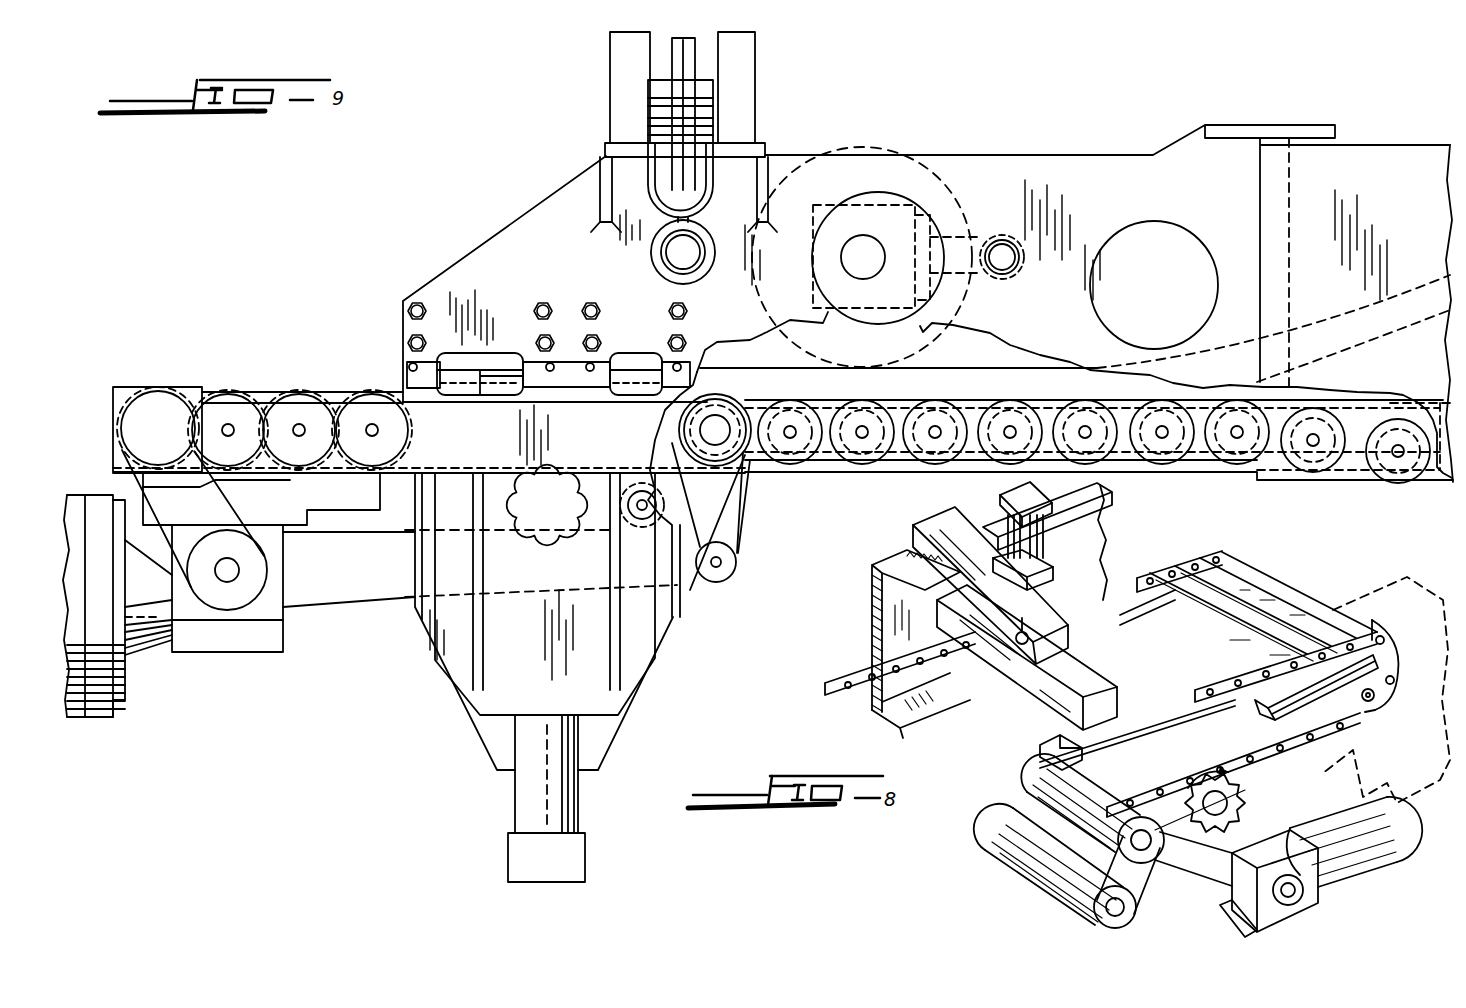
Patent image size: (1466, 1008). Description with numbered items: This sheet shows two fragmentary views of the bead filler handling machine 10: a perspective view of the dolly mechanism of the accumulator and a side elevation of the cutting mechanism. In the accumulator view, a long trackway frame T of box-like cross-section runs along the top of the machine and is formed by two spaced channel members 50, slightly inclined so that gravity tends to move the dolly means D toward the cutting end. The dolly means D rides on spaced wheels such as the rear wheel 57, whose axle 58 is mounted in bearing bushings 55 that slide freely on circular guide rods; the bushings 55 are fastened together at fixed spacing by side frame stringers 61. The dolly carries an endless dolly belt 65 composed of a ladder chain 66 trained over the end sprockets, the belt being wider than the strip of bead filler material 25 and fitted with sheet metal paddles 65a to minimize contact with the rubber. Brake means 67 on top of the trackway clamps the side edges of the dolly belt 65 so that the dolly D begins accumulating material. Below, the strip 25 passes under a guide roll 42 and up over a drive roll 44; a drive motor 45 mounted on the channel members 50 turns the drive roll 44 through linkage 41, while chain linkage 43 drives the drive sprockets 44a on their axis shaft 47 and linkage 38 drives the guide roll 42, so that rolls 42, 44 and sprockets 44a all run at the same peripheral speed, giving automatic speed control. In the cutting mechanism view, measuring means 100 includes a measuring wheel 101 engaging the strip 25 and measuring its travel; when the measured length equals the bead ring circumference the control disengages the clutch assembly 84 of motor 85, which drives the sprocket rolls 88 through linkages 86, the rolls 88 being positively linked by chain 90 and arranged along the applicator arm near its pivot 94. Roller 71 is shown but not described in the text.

In FIG. 9, the machine 10 is at (538, 118).
In FIG. 9, the strip of bead filler material 25 is at (1099, 427).
In FIG. 9, the end roller 71 is at (1425, 424).
In FIG. 9, the sprocket rolls 88 is at (760, 472).
In FIG. 9, the chain 90 is at (255, 392).
In FIG. 9, the applicator arm pivot 94 is at (113, 410).
In FIG. 9, the linkages 86 is at (745, 512).
In FIG. 9, the clutch assembly 84 is at (270, 635).
In FIG. 9, the motor 85 is at (150, 656).
In FIG. 9, the measuring means 100 is at (858, 148).
In FIG. 9, the measuring wheel 101 is at (884, 153).
In FIG. 8, the channel members 50 is at (1108, 492).
In FIG. 8, the paddles 65a is at (1123, 607).
In FIG. 8, the brake means 67 is at (922, 612).
In FIG. 8, the ladder chain 66 is at (1226, 530).
In FIG. 8, the dolly belt 65 is at (1278, 590).
In FIG. 8, the rear wheel 57 is at (1386, 646).
In FIG. 8, the bearing bushings 55 is at (1384, 673).
In FIG. 8, the axle 58 is at (1372, 700).
In FIG. 8, the side frame stringers 61 is at (1303, 705).
In FIG. 8, the chain linkage 43 is at (1112, 752).
In FIG. 8, the drive roll 44 is at (1040, 780).
In FIG. 8, the guide roll 42 is at (1002, 832).
In FIG. 8, the linkage 38 is at (1141, 864).
In FIG. 8, the linkage 41 is at (1190, 868).
In FIG. 8, the axis shaft 47 is at (1248, 800).
In FIG. 8, the drive sprockets 44a is at (1250, 826).
In FIG. 8, the drive motor 45 is at (1370, 855).
In FIG. 8, the trackway frame T is at (1168, 562).
In FIG. 8, the dolly means D is at (1326, 575).